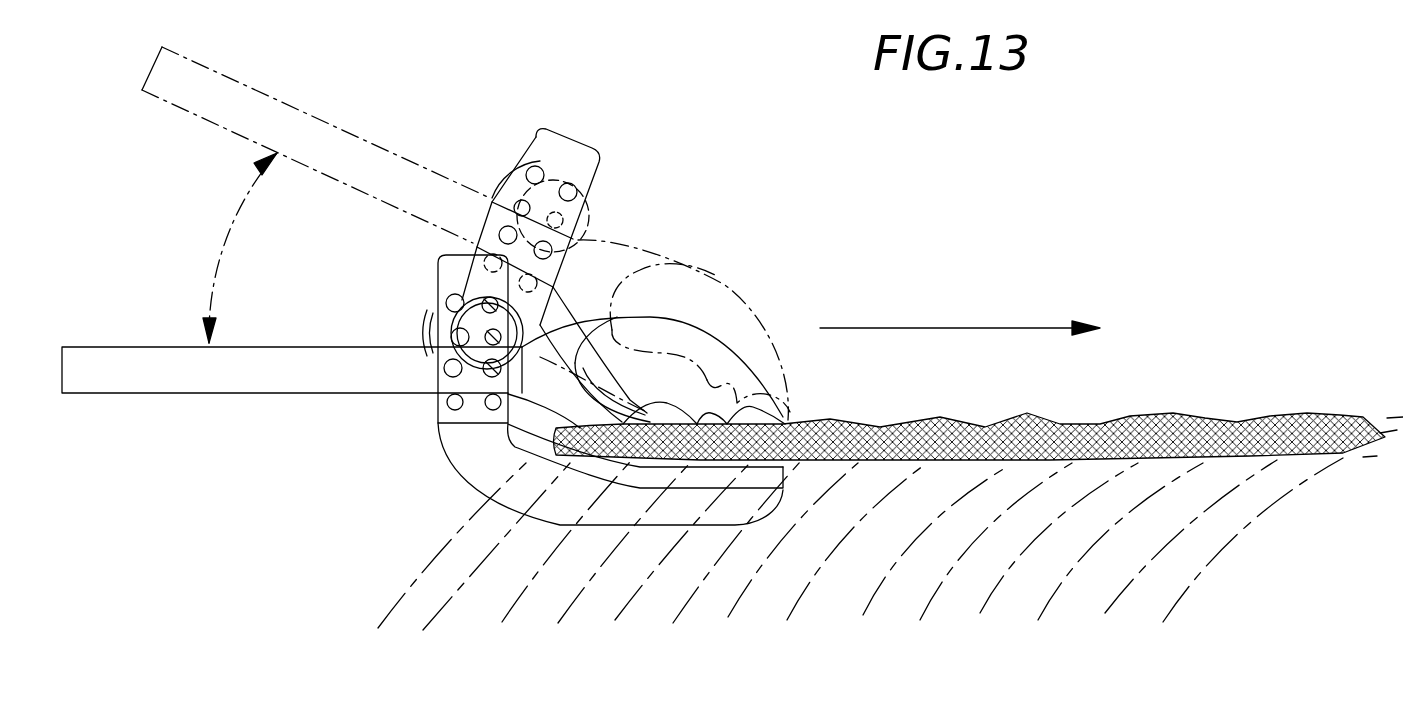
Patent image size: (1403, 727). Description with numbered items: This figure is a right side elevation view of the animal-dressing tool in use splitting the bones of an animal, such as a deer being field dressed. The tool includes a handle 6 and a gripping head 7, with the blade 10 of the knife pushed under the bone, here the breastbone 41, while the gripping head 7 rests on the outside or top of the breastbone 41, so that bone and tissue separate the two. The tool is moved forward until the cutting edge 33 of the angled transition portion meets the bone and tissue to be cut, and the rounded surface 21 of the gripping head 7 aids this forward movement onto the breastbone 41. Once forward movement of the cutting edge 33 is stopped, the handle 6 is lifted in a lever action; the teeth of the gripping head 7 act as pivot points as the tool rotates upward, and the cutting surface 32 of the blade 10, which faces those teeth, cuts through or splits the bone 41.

The handle 6 is at (113, 382).
The gripping head 7 is at (735, 258).
The blade 10 is at (644, 508).
The rounded surface 21 is at (440, 426).
The cutting surface 32 is at (634, 463).
The cutting edge 33 is at (516, 446).
The breastbone 41 is at (843, 425).